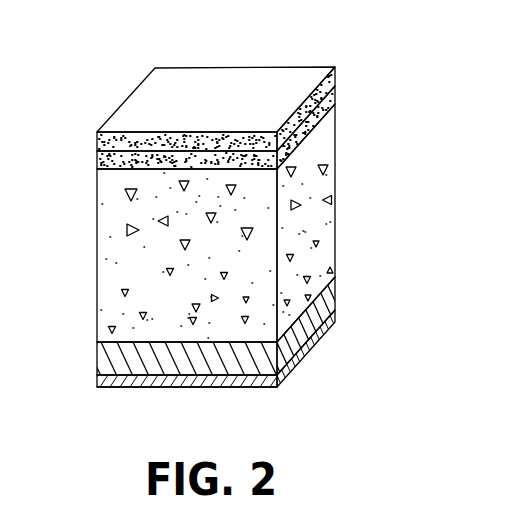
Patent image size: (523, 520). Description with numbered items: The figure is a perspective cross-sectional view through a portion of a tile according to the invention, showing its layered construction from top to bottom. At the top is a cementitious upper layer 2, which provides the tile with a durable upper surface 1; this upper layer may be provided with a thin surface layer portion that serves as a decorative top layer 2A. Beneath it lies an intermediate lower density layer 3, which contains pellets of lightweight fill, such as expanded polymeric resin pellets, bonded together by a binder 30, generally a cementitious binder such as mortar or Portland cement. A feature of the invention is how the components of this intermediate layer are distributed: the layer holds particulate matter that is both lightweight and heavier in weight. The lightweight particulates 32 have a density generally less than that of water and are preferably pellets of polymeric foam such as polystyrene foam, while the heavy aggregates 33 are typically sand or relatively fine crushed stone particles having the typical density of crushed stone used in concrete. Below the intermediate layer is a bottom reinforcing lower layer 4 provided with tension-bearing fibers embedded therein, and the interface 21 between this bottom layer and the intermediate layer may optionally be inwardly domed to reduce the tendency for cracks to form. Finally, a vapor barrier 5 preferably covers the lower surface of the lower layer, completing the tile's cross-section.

The upper surface 1 is at (277, 83).
The decorative top layer 2A is at (318, 89).
The cementitious upper layer 2 is at (302, 125).
The intermediate lower density layer 3 is at (310, 208).
The binder 30 is at (306, 232).
The lightweight particulates 32 is at (158, 221).
The heavy aggregates 33 is at (140, 316).
The bottom reinforcing lower layer 4 is at (330, 296).
The vapor barrier 5 is at (335, 320).
The interface 21 is at (227, 340).